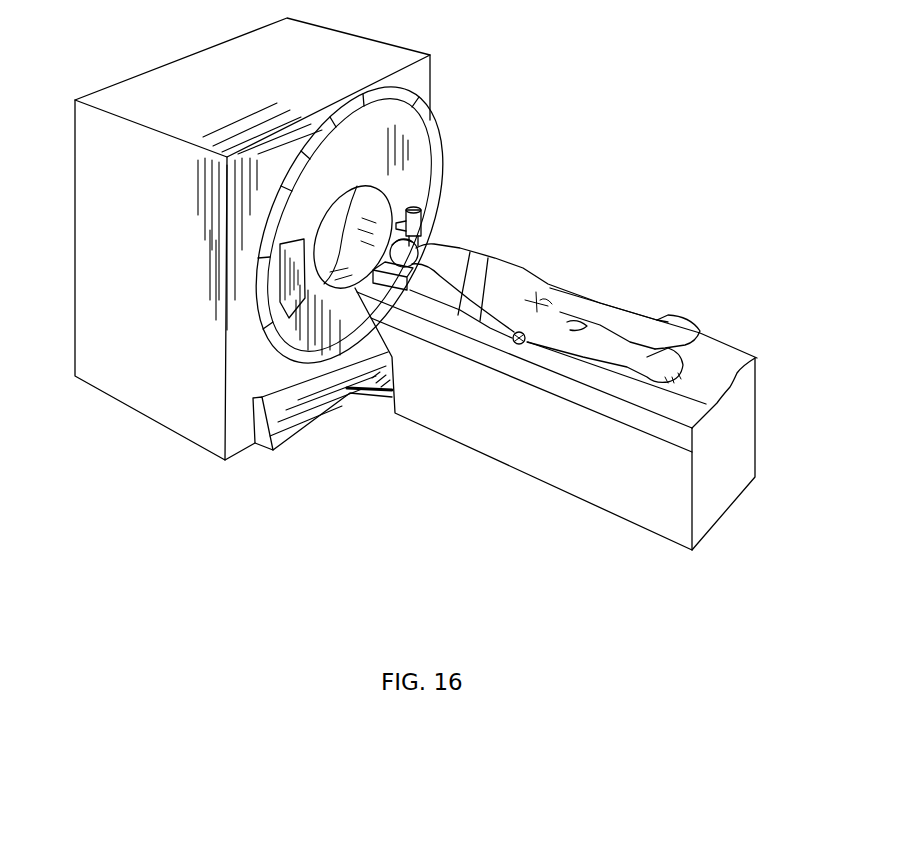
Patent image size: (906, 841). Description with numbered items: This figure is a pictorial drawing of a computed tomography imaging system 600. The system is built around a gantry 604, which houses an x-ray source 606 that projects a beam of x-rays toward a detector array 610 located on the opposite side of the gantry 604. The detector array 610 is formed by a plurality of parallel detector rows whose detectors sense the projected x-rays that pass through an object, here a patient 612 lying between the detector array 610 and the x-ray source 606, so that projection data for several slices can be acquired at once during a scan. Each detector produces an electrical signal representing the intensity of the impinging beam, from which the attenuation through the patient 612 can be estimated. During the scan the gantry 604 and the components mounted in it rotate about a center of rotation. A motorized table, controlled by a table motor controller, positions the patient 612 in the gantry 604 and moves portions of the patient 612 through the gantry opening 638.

The CT imaging system 600 is at (640, 123).
The gantry 604 is at (294, 246).
The x-ray source 606 is at (424, 220).
The detector array 610 is at (293, 292).
The patient 612 is at (455, 260).
The gantry opening 638 is at (342, 213).